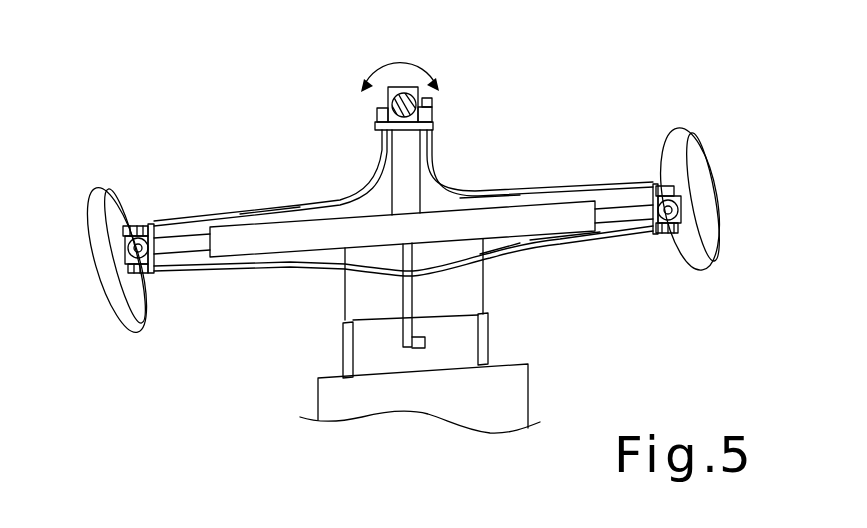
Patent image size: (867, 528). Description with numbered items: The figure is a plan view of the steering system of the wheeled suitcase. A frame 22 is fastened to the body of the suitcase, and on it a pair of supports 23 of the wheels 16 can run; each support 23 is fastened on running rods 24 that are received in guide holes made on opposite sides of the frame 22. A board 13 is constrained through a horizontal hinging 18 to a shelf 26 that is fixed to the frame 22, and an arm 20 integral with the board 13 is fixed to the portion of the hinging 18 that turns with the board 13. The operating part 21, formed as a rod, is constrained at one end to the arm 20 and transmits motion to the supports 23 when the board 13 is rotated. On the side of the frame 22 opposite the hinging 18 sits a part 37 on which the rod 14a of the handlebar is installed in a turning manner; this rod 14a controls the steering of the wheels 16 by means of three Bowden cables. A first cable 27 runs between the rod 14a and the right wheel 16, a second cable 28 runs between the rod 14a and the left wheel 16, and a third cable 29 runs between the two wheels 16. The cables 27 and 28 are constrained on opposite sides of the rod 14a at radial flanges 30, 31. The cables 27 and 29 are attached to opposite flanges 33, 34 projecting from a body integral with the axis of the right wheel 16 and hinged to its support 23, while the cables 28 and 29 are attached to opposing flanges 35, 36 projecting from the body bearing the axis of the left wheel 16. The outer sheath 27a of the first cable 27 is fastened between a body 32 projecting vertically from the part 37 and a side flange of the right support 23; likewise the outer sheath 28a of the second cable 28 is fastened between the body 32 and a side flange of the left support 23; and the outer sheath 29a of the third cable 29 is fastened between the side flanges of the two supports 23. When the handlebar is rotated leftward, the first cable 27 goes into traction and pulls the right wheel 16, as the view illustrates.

The board 13 is at (347, 407).
The rod of the handlebar 14a is at (402, 61).
The wheel 16 is at (710, 257).
The horizontal hinging 18 is at (348, 350).
The arm 20 is at (418, 353).
The operating part 21 is at (402, 318).
The frame 22 is at (258, 243).
The support 23 is at (157, 268).
The running rod 24 is at (180, 242).
The shelf 26 is at (363, 293).
The first cable 27 is at (543, 168).
The outer sheath 27a is at (478, 193).
The second cable 28 is at (235, 197).
The outer sheath 28a is at (282, 207).
The third cable 29 is at (503, 276).
The outer sheath 29a is at (558, 245).
The radial flange 30 is at (436, 120).
The radial flange 31 is at (372, 112).
The body 32 is at (418, 103).
The flange 33 is at (688, 223).
The flange 34 is at (668, 186).
The flange 35 is at (127, 224).
The flange 36 is at (123, 322).
The part 37 is at (403, 172).